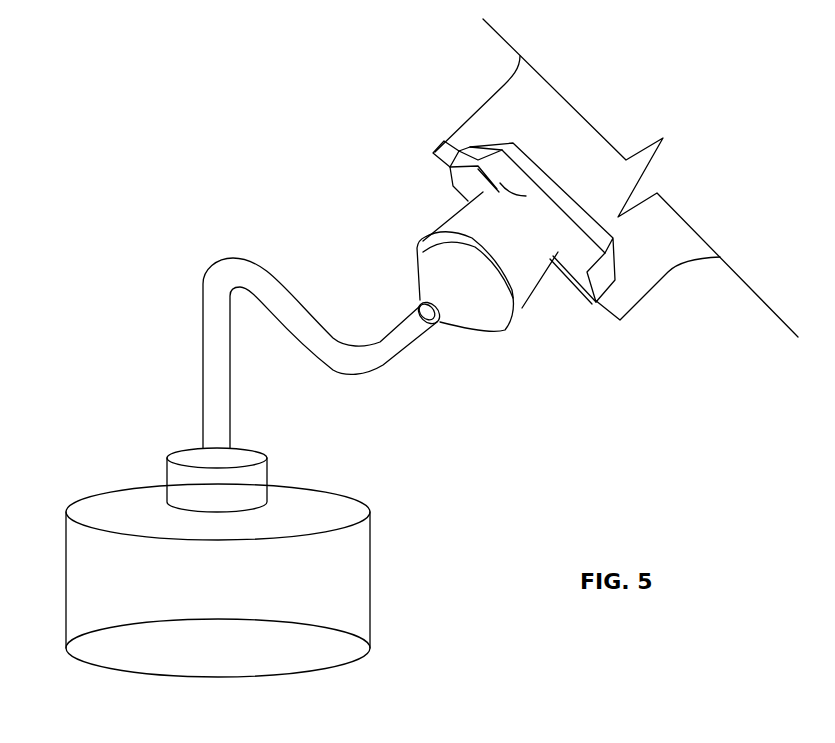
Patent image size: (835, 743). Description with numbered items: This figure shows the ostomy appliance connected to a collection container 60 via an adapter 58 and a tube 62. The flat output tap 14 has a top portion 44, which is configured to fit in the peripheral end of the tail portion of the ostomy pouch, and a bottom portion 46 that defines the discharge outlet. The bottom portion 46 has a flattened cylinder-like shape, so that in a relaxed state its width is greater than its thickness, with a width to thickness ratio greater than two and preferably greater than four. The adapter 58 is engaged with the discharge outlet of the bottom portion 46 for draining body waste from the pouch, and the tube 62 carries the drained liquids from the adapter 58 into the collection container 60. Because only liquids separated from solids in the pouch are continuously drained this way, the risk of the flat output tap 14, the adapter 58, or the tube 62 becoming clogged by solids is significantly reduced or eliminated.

The flat output tap 14 is at (490, 160).
The top portion 44 is at (440, 150).
The bottom portion 46 is at (477, 222).
The adapter 58 is at (486, 312).
The tube 62 is at (409, 332).
The collection container 60 is at (123, 510).